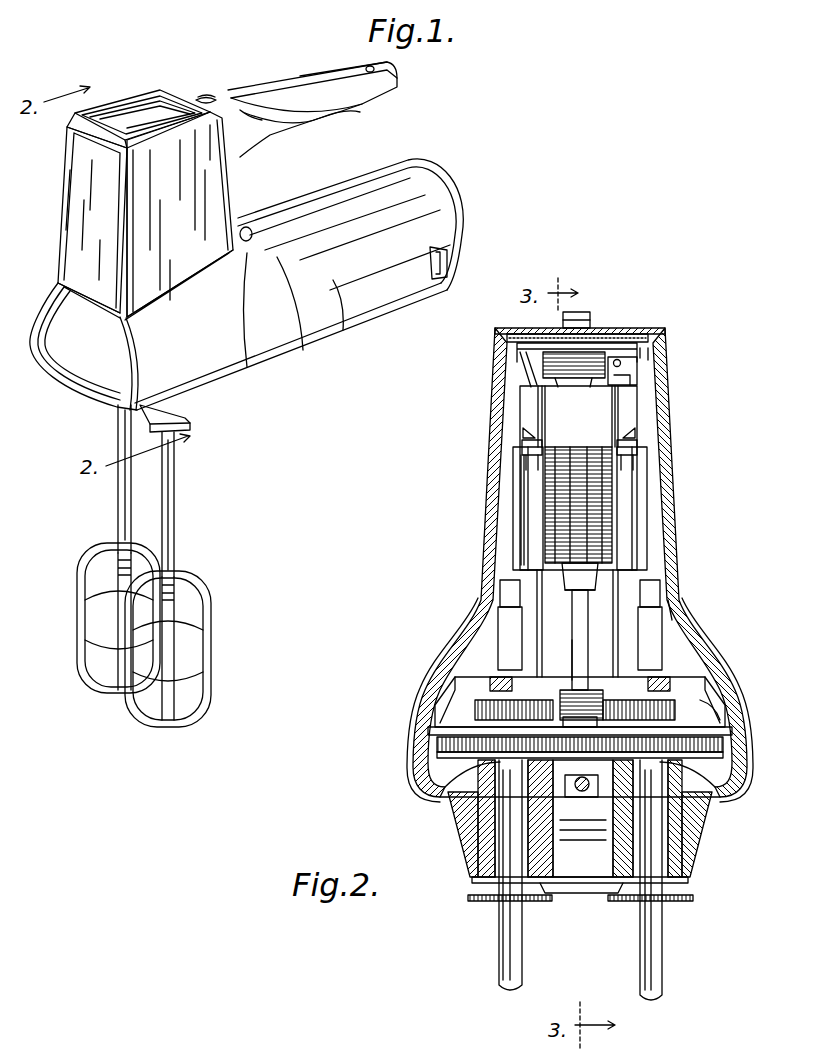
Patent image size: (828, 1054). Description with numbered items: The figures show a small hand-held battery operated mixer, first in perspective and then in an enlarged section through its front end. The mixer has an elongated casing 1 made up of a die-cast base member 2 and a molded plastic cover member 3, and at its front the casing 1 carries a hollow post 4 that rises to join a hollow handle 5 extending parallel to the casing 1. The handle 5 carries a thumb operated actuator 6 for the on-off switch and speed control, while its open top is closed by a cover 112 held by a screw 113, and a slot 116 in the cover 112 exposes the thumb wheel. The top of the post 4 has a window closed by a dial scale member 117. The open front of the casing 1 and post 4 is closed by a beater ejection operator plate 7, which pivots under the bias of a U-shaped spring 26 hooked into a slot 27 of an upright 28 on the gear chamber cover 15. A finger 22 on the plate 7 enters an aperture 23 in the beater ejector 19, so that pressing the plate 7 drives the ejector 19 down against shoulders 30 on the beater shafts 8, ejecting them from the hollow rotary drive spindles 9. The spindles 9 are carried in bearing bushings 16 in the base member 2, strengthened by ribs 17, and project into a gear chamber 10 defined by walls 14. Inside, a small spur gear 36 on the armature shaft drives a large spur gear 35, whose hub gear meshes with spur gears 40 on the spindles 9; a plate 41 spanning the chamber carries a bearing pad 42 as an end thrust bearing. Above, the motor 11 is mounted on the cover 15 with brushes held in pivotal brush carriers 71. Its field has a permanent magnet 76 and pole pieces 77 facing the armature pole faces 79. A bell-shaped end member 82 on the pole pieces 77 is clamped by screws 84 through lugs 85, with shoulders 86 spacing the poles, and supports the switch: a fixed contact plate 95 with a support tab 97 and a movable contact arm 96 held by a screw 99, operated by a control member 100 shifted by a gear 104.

In FIG. 1, the casing 1 is at (422, 160).
In FIG. 1, the base member 2 is at (354, 340).
In FIG. 2, the base member 2 is at (402, 787).
In FIG. 1, the cover member 3 is at (435, 209).
In FIG. 2, the cover member 3 is at (420, 654).
In FIG. 1, the hollow post 4 is at (186, 198).
In FIG. 2, the hollow post 4 is at (690, 514).
In FIG. 1, the handle 5 is at (350, 117).
In FIG. 1, the thumb operated actuator 6 is at (213, 88).
In FIG. 2, the thumb operated actuator 6 is at (585, 318).
In FIG. 1, the beater ejection operator plate 7 is at (73, 212).
In FIG. 1, the beater shafts 8 is at (128, 484).
In FIG. 2, the beater shafts 8 is at (655, 950).
In FIG. 2, the rotary drive spindles 9 is at (470, 820).
In FIG. 2, the gear chamber 10 is at (700, 712).
In FIG. 2, the motor 11 is at (668, 550).
In FIG. 2, the walls 14 is at (430, 760).
In FIG. 2, the gear chamber cover 15 is at (470, 693).
In FIG. 2, the bearing bushings 16 is at (470, 770).
In FIG. 2, the ribs 17 is at (458, 812).
In FIG. 2, the beater ejector 19 is at (583, 872).
In FIG. 2, the finger 22 is at (592, 797).
In FIG. 2, the aperture 23 is at (575, 794).
In FIG. 2, the spring 26 is at (570, 592).
In FIG. 2, the slot 27 is at (577, 592).
In FIG. 2, the upright 28 is at (595, 648).
In FIG. 1, the shoulders 30 is at (192, 428).
In FIG. 2, the shoulders 30 is at (480, 903).
In FIG. 2, the large spur gear 35 is at (472, 707).
In FIG. 2, the small spur gear 36 is at (590, 720).
In FIG. 2, the spur gears 40 is at (440, 745).
In FIG. 2, the plate 41 is at (722, 716).
In FIG. 2, the bearing pad 42 is at (549, 720).
In FIG. 2, the brush carriers 71 is at (505, 590).
In FIG. 2, the permanent magnet 76 is at (526, 530).
In FIG. 2, the pole pieces 77 is at (525, 492).
In FIG. 2, the armature pole faces 79 is at (592, 462).
In FIG. 2, the bell-shaped end member 82 is at (545, 407).
In FIG. 2, the screws 84 is at (522, 432).
In FIG. 2, the lugs 85 is at (520, 446).
In FIG. 2, the shoulders 86 is at (545, 456).
In FIG. 2, the fixed contact plate 95 is at (540, 345).
In FIG. 2, the movable contact arm 96 is at (637, 364).
In FIG. 2, the support tab 97 is at (520, 375).
In FIG. 2, the screw 99 is at (640, 380).
In FIG. 1, the switch control member 100 is at (152, 100).
In FIG. 2, the switch control member 100 is at (655, 348).
In FIG. 2, the gear 104 is at (602, 372).
In FIG. 1, the cover 112 is at (278, 68).
In FIG. 1, the screw 113 is at (371, 66).
In FIG. 1, the slot 116 is at (244, 117).
In FIG. 1, the dial scale member 117 is at (118, 110).
In FIG. 2, the dial scale member 117 is at (625, 334).